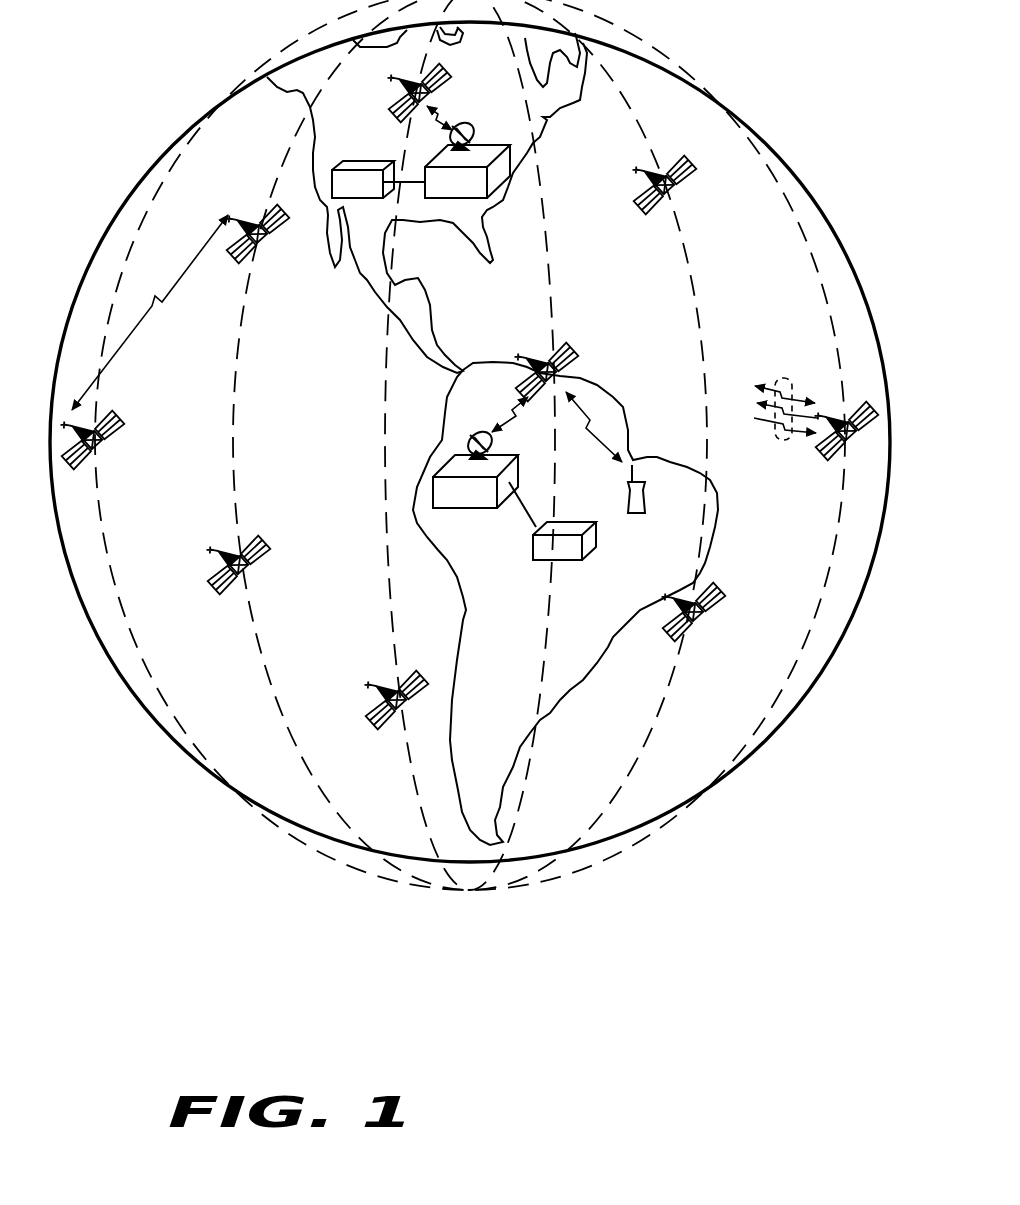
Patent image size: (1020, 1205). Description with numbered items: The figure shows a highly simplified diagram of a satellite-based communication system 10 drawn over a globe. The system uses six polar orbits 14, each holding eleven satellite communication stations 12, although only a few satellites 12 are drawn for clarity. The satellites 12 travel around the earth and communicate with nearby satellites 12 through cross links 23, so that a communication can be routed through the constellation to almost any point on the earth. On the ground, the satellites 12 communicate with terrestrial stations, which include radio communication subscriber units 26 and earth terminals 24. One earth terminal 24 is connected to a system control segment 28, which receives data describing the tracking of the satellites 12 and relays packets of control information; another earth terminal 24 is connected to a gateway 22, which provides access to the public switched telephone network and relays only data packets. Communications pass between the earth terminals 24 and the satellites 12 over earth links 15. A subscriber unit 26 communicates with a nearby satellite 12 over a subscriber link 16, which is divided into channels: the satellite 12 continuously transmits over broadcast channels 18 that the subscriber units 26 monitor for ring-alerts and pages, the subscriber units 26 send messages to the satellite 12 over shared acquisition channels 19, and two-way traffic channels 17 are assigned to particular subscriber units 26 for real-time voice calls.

The satellite-based communication system 10 is at (463, 990).
The satellite communication station 12 is at (400, 116).
The polar orbit 14 is at (290, 164).
The earth link 15 is at (505, 410).
The subscriber link 16 is at (584, 396).
The traffic channel 17 is at (778, 383).
The broadcast channel 18 is at (766, 398).
The acquisition channel 19 is at (774, 434).
The gateway 22 is at (569, 562).
The cross link 23 is at (166, 300).
The earth terminal 24 is at (490, 142).
The subscriber unit 26 is at (635, 515).
The system control segment 28 is at (350, 199).